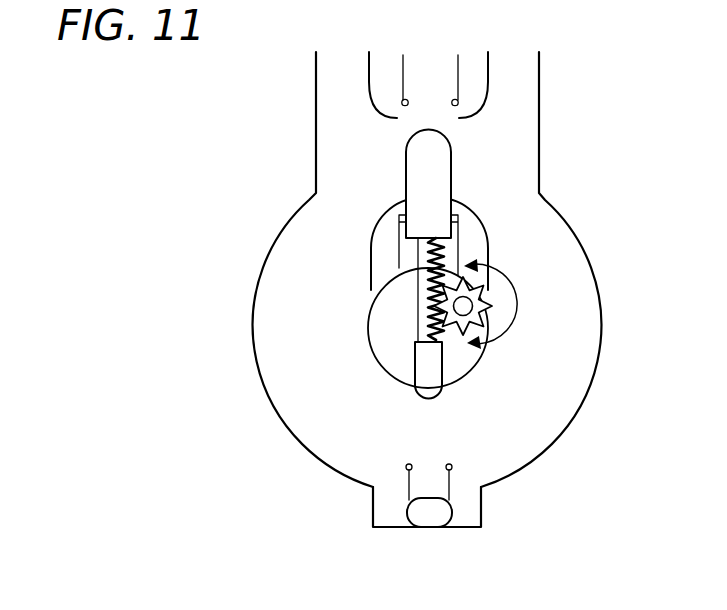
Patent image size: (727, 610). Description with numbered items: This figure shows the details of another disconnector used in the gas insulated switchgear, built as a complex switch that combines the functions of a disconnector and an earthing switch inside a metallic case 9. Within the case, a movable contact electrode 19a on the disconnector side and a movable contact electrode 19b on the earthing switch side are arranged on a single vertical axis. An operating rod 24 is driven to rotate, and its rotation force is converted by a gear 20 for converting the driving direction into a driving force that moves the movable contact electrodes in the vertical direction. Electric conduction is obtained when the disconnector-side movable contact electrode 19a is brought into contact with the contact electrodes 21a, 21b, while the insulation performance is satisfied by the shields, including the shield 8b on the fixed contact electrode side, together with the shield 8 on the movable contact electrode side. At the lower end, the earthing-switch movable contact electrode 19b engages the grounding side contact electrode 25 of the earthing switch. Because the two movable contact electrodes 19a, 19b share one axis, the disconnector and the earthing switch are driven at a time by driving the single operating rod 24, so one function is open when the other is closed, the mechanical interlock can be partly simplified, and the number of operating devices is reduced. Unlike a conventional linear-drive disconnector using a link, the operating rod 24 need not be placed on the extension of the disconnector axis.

The shield 8 is at (488, 245).
The shield in fixed contact electrode side 8b is at (488, 70).
The metallic case 9 is at (252, 323).
The movable contact electrode in the disconnector side 19a is at (452, 175).
The movable contact electrode in the earthing switch side 19b is at (423, 367).
The gear for converting the driving direction 20 is at (457, 313).
The contact electrode 21a is at (397, 262).
The contact electrode 21b is at (403, 78).
The operating rod 24 is at (483, 345).
The grounding side contact electrode of the earthing switch 25 is at (412, 512).